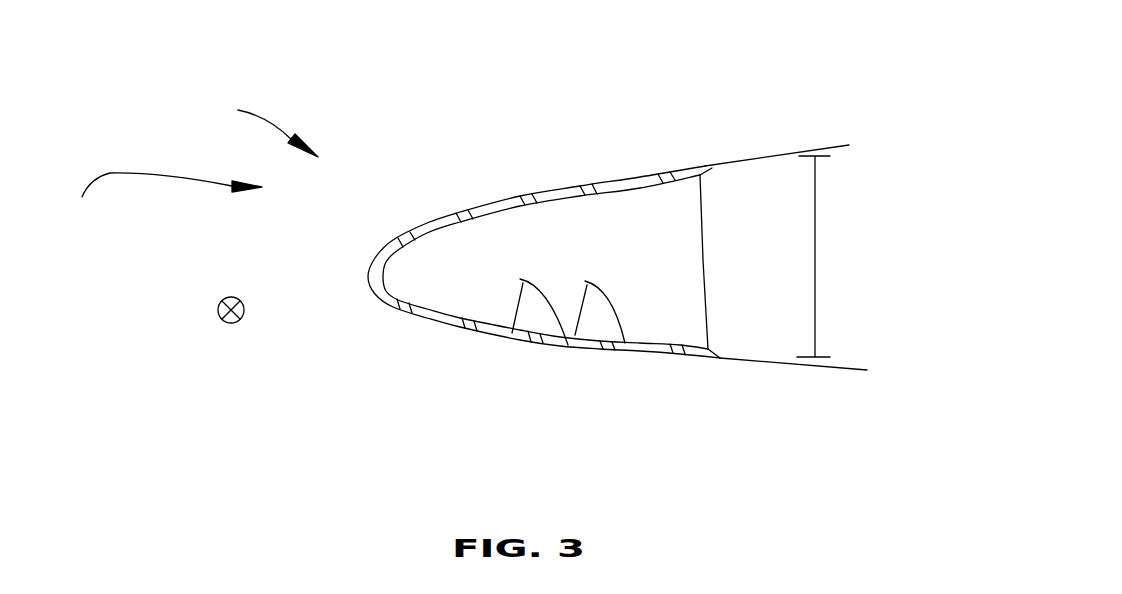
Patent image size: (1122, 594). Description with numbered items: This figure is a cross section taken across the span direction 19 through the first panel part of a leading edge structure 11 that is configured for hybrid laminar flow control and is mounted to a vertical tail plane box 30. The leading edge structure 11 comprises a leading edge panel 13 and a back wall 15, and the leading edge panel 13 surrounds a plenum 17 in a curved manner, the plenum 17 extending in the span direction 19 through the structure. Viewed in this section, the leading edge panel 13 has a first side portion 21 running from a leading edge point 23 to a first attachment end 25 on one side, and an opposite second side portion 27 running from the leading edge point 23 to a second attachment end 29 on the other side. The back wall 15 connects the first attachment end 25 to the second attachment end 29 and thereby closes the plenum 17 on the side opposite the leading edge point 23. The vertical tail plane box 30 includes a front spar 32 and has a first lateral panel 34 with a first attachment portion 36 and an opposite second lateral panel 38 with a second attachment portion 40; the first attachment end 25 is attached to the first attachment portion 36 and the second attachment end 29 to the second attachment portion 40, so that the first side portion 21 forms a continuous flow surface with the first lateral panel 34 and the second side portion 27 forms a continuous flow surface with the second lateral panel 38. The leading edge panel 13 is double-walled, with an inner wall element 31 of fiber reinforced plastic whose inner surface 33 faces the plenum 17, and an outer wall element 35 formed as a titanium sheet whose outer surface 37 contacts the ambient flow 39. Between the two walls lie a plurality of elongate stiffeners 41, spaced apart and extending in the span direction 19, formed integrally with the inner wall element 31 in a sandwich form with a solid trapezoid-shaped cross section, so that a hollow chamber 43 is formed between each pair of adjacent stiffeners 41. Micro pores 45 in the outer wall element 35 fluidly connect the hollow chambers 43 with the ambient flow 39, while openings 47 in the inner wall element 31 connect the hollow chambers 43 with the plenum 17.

The leading edge structure 11 is at (263, 126).
The leading edge panel 13 is at (572, 190).
The back wall 15 is at (707, 297).
The plenum 17 is at (638, 263).
The span direction 19 is at (230, 297).
The first side portion 21 is at (625, 177).
The leading edge point 23 is at (368, 279).
The first attachment end 25 is at (706, 166).
The second side portion 27 is at (625, 347).
The second attachment end 29 is at (717, 358).
The vertical tail plane box 30 is at (830, 152).
The inner wall element 31 is at (613, 189).
The front spar 32 is at (815, 267).
The inner surface 33 is at (620, 191).
The first lateral panel 34 is at (849, 145).
The outer wall element 35 is at (475, 204).
The first attachment portion 36 is at (787, 150).
The outer surface 37 is at (470, 200).
The second lateral panel 38 is at (832, 364).
The ambient flow 39 is at (138, 170).
The second attachment portion 40 is at (777, 367).
The stiffeners 41 is at (601, 345).
The hollow chamber 43 is at (520, 279).
The micro pores 45 is at (406, 232).
The openings 47 is at (585, 281).